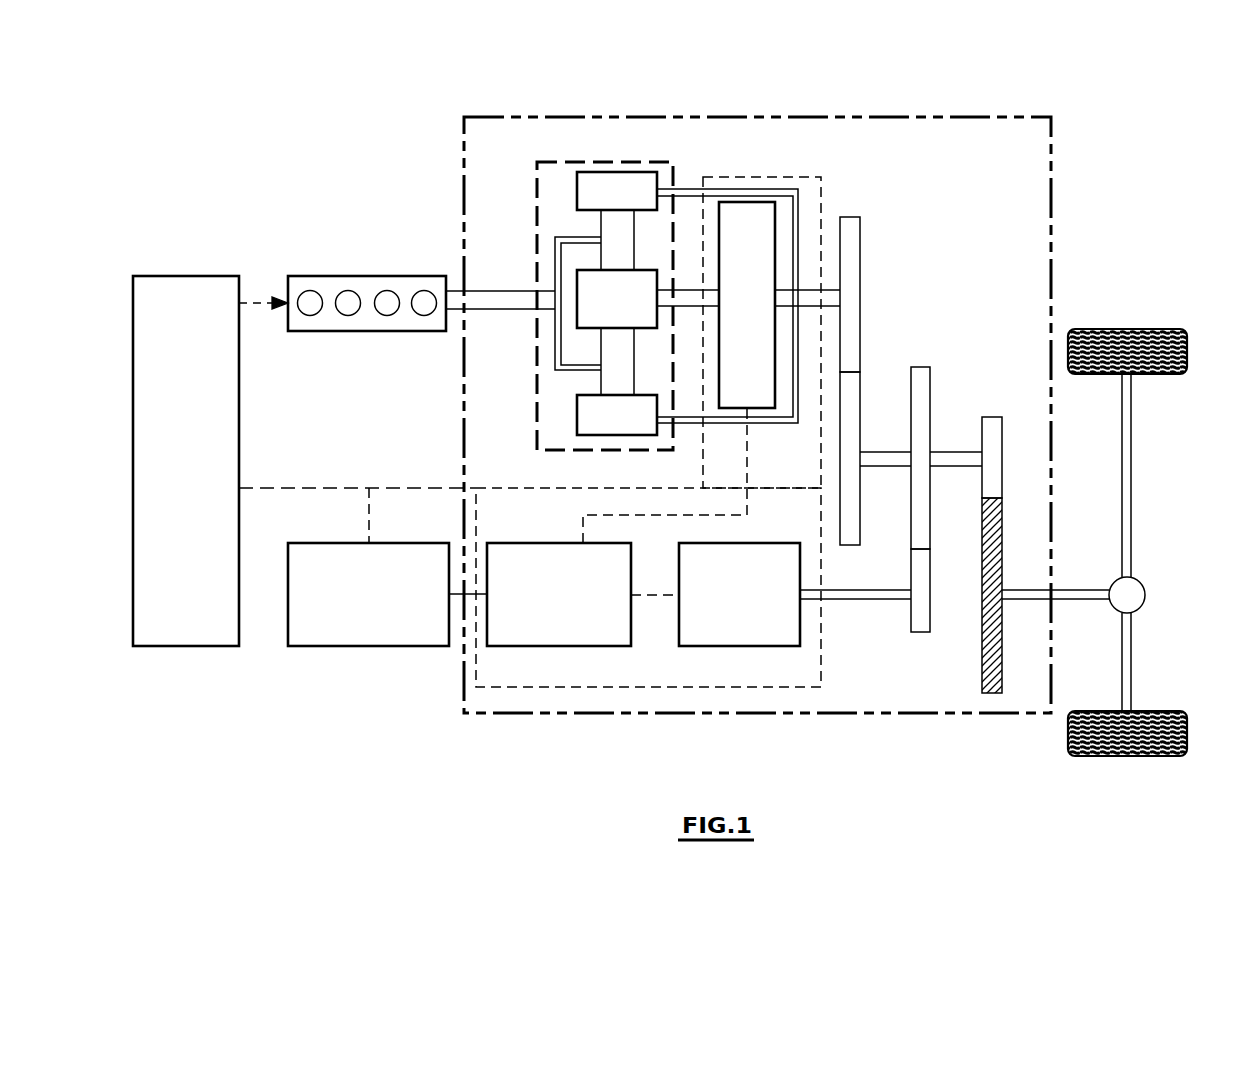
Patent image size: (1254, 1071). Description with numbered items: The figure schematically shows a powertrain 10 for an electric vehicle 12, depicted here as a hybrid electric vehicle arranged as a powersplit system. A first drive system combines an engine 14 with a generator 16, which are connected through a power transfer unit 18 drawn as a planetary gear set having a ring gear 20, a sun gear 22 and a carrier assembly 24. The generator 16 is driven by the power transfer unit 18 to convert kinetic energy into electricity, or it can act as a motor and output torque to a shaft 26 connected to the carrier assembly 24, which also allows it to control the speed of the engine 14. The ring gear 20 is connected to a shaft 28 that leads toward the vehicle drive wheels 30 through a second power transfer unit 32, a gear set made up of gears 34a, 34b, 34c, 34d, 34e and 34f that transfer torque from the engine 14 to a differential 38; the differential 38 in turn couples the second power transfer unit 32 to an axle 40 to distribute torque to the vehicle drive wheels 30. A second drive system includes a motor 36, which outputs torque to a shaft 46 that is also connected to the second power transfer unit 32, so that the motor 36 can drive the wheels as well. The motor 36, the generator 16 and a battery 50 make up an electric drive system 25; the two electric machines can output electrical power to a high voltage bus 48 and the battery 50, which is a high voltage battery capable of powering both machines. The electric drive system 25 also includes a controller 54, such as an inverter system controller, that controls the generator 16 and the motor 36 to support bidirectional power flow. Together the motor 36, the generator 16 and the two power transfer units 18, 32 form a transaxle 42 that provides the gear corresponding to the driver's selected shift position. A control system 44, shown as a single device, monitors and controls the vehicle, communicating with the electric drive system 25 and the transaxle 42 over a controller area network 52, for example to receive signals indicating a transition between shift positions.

The powertrain 10 is at (399, 193).
The electric vehicle 12 is at (875, 112).
The engine 14 is at (331, 332).
The generator 16 is at (760, 206).
The power transfer unit 18 is at (536, 248).
The ring gear 20 is at (576, 193).
The sun gear 22 is at (578, 284).
The carrier assembly 24 is at (555, 357).
The electric drive system 25 is at (566, 688).
The shaft 26 is at (694, 307).
The shaft 28 is at (829, 288).
The vehicle drive wheels 30 is at (1139, 321).
The second power transfer unit 32 is at (917, 333).
The gear 34a is at (860, 251).
The gear 34b is at (845, 546).
The gear 34c is at (930, 385).
The gear 34d is at (919, 633).
The gear 34e is at (992, 417).
The gear 34f is at (992, 694).
The motor 36 is at (750, 646).
The differential 38 is at (1133, 590).
The axle 40 is at (1075, 585).
The transaxle 42 is at (931, 714).
The control system 44 is at (182, 276).
The shaft 46 is at (862, 600).
The high voltage bus 48 is at (460, 597).
The battery 50 is at (365, 647).
The controller area network 52 is at (357, 488).
The controller 54 is at (558, 543).